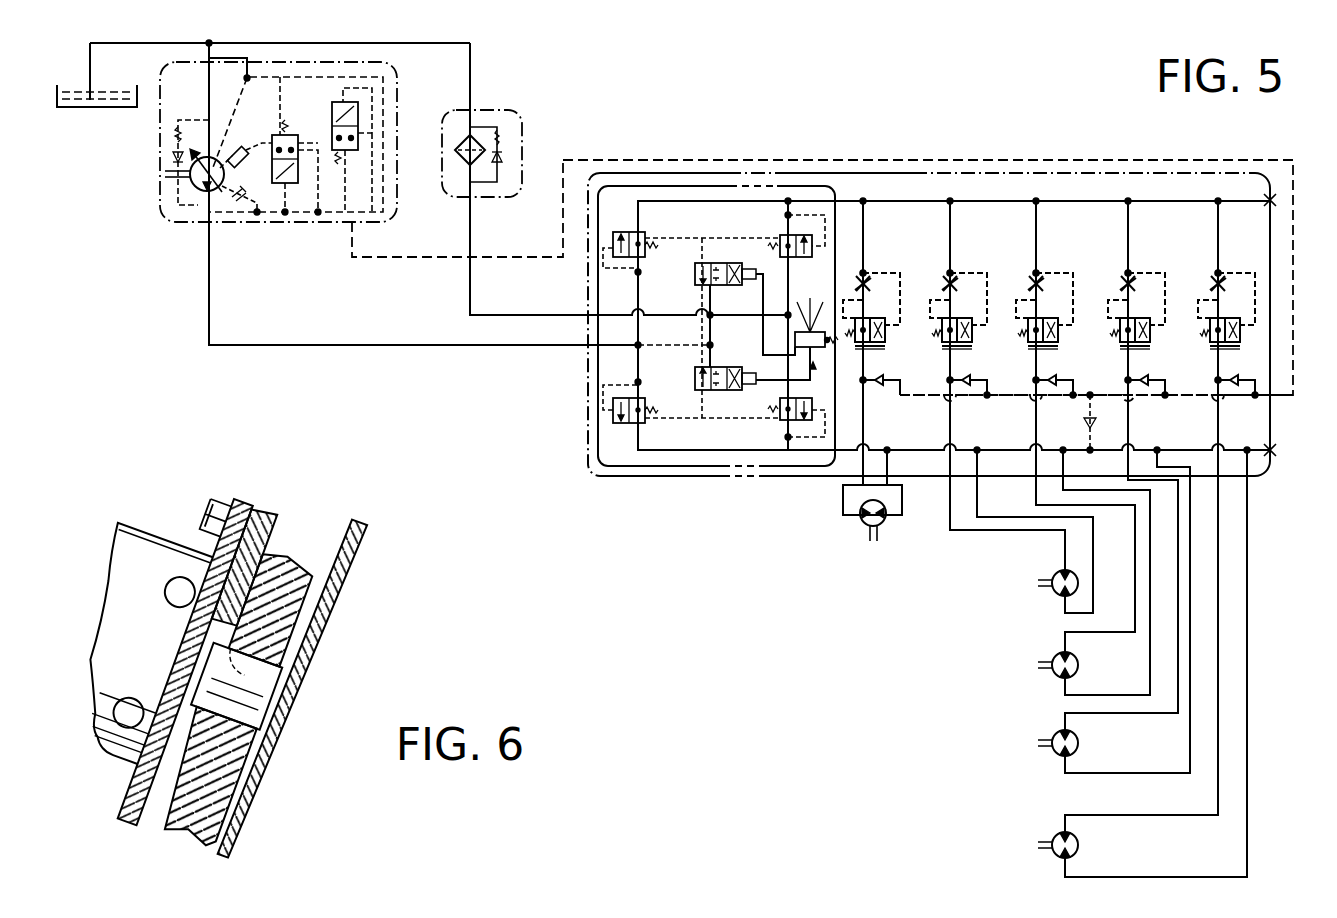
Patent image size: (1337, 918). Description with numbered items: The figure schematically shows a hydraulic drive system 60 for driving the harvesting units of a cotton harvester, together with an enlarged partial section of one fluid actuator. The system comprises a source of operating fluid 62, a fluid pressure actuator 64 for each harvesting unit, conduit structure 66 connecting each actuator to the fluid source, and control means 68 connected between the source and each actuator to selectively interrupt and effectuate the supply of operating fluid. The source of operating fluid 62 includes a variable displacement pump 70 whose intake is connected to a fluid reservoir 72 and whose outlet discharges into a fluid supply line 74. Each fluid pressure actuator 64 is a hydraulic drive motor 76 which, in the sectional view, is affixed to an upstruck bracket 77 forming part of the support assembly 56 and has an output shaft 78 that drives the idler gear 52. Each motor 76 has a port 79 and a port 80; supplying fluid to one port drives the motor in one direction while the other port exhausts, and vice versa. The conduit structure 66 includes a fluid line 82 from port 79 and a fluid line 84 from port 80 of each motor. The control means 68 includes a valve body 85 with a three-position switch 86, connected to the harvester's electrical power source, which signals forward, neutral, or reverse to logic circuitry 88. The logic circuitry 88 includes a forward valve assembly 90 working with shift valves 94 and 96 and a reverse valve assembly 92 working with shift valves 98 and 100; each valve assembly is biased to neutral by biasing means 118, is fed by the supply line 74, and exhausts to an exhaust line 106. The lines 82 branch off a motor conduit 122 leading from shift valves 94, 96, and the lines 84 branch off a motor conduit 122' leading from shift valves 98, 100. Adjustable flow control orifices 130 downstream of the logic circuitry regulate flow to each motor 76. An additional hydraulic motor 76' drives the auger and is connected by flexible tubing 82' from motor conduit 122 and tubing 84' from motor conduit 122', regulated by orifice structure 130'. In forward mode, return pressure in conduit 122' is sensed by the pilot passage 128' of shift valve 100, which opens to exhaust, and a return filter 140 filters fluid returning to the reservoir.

In FIG. 6, the idler gear 52 is at (288, 560).
In FIG. 6, the support assembly 56 is at (340, 588).
In FIG. 5, the hydraulic drive system 60 is at (1012, 128).
In FIG. 5, the source of operating fluid 62 is at (158, 218).
In FIG. 5, the fluid pressure actuator 64 is at (1035, 590).
In FIG. 5, the conduit structure 66 is at (1125, 662).
In FIG. 5, the control means 68 is at (640, 470).
In FIG. 5, the variable displacement pump 70 is at (195, 180).
In FIG. 5, the fluid reservoir 72 is at (125, 95).
In FIG. 5, the fluid supply line 74 is at (292, 345).
In FIG. 5, the hydraulic drive motor 76 is at (1077, 714).
In FIG. 6, the hydraulic drive motor 76 is at (128, 620).
In FIG. 5, the additional hydraulic motor 76' is at (849, 540).
In FIG. 6, the upstruck bracket 77 is at (266, 518).
In FIG. 6, the output shaft 78 is at (270, 700).
In FIG. 5, the port 79 is at (1060, 575).
In FIG. 6, the port 79 is at (176, 600).
In FIG. 5, the port 80 is at (1060, 594).
In FIG. 6, the port 80 is at (136, 708).
In FIG. 5, the fluid line 82 is at (1120, 651).
In FIG. 5, the flexible tubing 82' is at (849, 483).
In FIG. 5, the fluid line 84 is at (1146, 662).
In FIG. 5, the flexible tubing 84' is at (891, 536).
In FIG. 5, the valve body 85 is at (644, 176).
In FIG. 5, the switch 86 is at (830, 345).
In FIG. 5, the logic circuitry 88 is at (788, 182).
In FIG. 5, the forward valve assembly 90 is at (712, 258).
In FIG. 5, the reverse valve assembly 92 is at (728, 395).
In FIG. 5, the shift valve 94 is at (613, 262).
In FIG. 5, the shift valve 96 is at (816, 248).
In FIG. 5, the shift valve 98 is at (612, 414).
In FIG. 5, the shift valve 100 is at (818, 412).
In FIG. 5, the exhaust line 106 is at (470, 314).
In FIG. 5, the biasing means 118 is at (700, 272).
In FIG. 5, the motor conduit 122 is at (1027, 160).
In FIG. 5, the motor conduit 122' is at (713, 366).
In FIG. 5, the pilot passage 128' is at (999, 488).
In FIG. 5, the adjustable flow control orifice 130 is at (1096, 327).
In FIG. 5, the orifice structure 130' is at (889, 325).
In FIG. 5, the return filter 140 is at (530, 133).